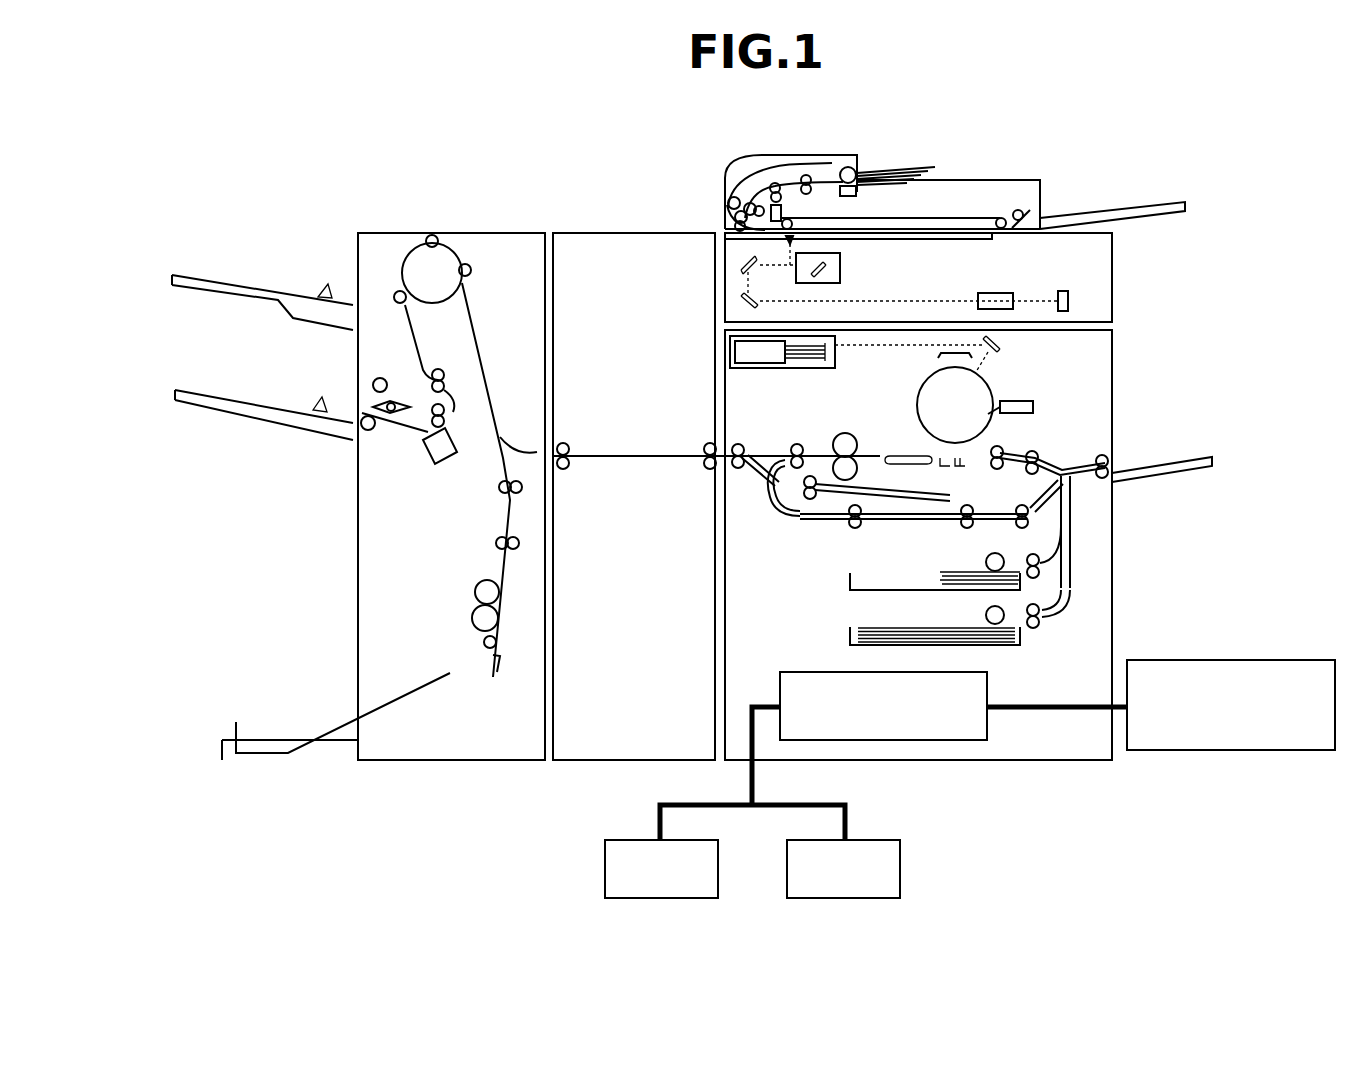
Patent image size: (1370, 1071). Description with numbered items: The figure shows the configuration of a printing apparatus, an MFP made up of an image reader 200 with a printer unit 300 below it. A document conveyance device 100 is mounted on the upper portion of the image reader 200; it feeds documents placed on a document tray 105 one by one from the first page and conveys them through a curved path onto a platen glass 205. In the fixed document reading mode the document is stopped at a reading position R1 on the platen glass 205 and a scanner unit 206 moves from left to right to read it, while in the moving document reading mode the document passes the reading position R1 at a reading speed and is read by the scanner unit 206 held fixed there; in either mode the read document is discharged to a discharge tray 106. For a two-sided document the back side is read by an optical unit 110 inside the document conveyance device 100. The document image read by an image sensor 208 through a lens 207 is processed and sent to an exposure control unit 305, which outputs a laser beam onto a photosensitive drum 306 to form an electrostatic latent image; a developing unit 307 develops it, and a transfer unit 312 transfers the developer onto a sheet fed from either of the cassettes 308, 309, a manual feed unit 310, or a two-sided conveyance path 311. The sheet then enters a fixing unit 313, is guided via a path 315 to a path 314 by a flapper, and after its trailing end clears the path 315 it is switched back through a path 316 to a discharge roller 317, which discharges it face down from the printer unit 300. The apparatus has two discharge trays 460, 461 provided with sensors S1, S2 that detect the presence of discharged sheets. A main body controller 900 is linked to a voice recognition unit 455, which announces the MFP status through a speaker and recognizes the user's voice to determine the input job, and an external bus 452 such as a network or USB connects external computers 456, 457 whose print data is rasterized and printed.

The document conveyance device 100 is at (747, 170).
The optical unit 110 is at (782, 212).
The document tray 105 is at (1003, 180).
The discharge tray 106 is at (1128, 208).
The image reader 200 is at (1112, 257).
The platen glass 205 is at (994, 238).
The reading position R1 is at (775, 250).
The scanner unit 206 is at (841, 262).
The lens 207 is at (989, 294).
The image sensor 208 is at (1069, 300).
The printer unit 300 is at (1112, 543).
The exposure control unit 305 is at (742, 369).
The photosensitive drum 306 is at (990, 377).
The developing unit 307 is at (1030, 415).
The cassette 308 is at (848, 583).
The cassette 309 is at (848, 637).
The manual feed unit 310 is at (1165, 459).
The two-sided conveyance path 311 is at (815, 519).
The transfer unit 312 is at (951, 462).
The fixing unit 313 is at (847, 433).
The path 314 is at (908, 494).
The path 315 is at (783, 462).
The path 316 is at (766, 490).
The discharge roller 317 is at (736, 452).
The discharge tray 460 is at (217, 280).
The discharge tray 461 is at (220, 394).
The sensor S1 is at (324, 287).
The sensor S2 is at (322, 400).
The main body controller 900 is at (988, 683).
The voice recognition unit 455 is at (1239, 660).
The external bus 452 is at (754, 781).
The external computer 456 is at (604, 871).
The external computer 457 is at (901, 871).